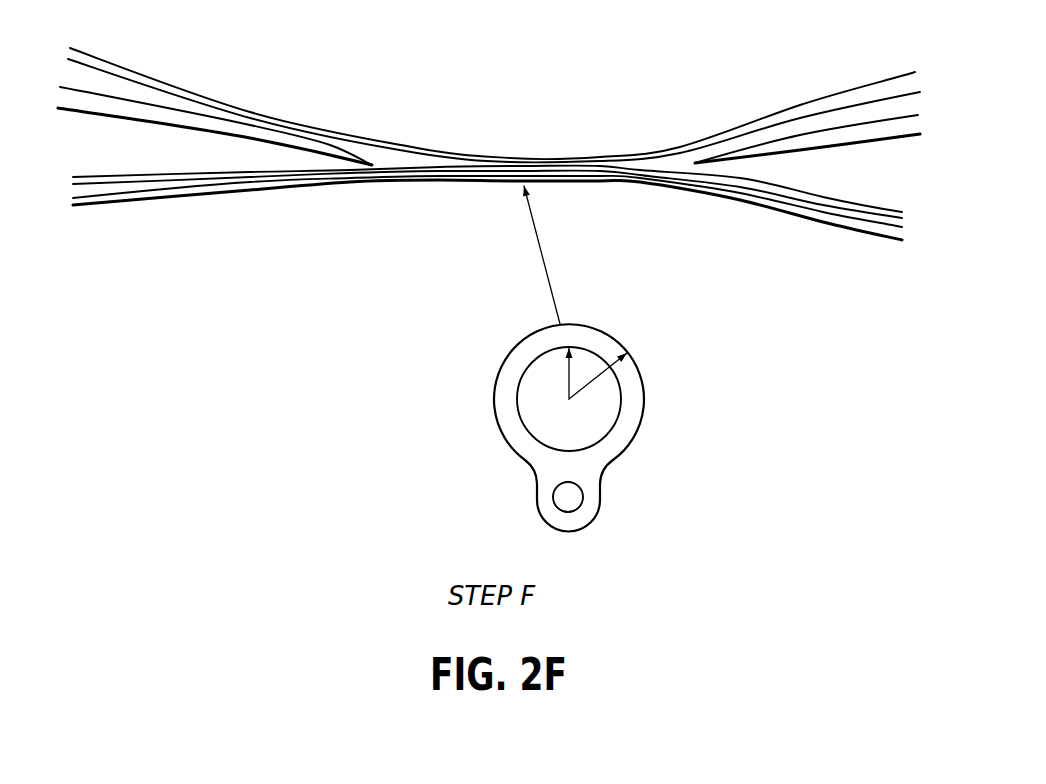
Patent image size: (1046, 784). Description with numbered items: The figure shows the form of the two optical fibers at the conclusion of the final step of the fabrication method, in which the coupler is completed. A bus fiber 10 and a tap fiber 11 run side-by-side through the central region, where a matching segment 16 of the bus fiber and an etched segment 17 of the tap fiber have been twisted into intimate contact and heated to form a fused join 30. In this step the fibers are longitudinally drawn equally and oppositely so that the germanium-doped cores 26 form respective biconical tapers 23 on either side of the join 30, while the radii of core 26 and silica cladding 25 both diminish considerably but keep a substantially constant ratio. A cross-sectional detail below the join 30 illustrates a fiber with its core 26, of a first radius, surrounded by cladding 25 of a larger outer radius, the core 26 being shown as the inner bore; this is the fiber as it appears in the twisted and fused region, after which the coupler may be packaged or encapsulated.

The bus fiber 10 is at (832, 97).
The tap fiber 11 is at (808, 216).
The matching segment 16 is at (603, 152).
The etched segment 17 is at (602, 186).
The biconical tapers 23 is at (295, 177).
The silica cladding 25 is at (180, 177).
The germanium-doped core 26 is at (107, 85).
The join 30 is at (493, 152).